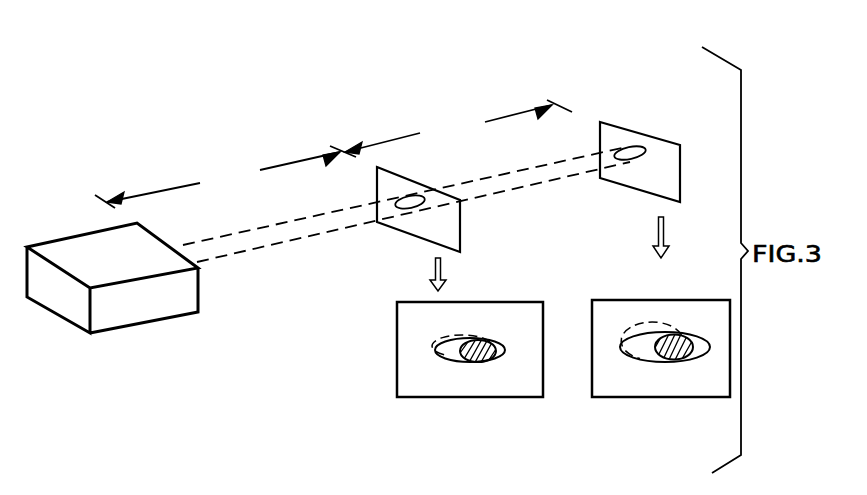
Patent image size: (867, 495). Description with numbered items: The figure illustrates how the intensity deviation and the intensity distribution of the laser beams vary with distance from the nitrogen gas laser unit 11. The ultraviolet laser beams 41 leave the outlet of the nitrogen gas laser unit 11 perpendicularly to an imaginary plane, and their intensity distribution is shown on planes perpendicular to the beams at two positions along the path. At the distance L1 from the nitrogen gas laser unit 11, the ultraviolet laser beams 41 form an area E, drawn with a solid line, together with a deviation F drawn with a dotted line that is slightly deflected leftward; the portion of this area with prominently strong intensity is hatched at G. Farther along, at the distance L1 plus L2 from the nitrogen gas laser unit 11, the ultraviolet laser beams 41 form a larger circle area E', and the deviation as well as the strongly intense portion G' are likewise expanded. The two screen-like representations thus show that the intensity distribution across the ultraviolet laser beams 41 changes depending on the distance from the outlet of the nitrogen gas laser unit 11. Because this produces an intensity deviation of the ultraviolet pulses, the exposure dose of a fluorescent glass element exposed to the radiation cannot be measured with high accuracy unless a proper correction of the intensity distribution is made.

The nitrogen gas laser unit 11 is at (148, 323).
The ultraviolet laser beams 41 is at (305, 237).
The area E is at (441, 302).
The larger circle area E' is at (655, 273).
The deviation F is at (438, 337).
The portion showing prominently strong intensity G is at (487, 395).
The portion showing prominently strong intensity G' is at (682, 389).
The distance L1 is at (217, 180).
The distance L2 is at (451, 128).